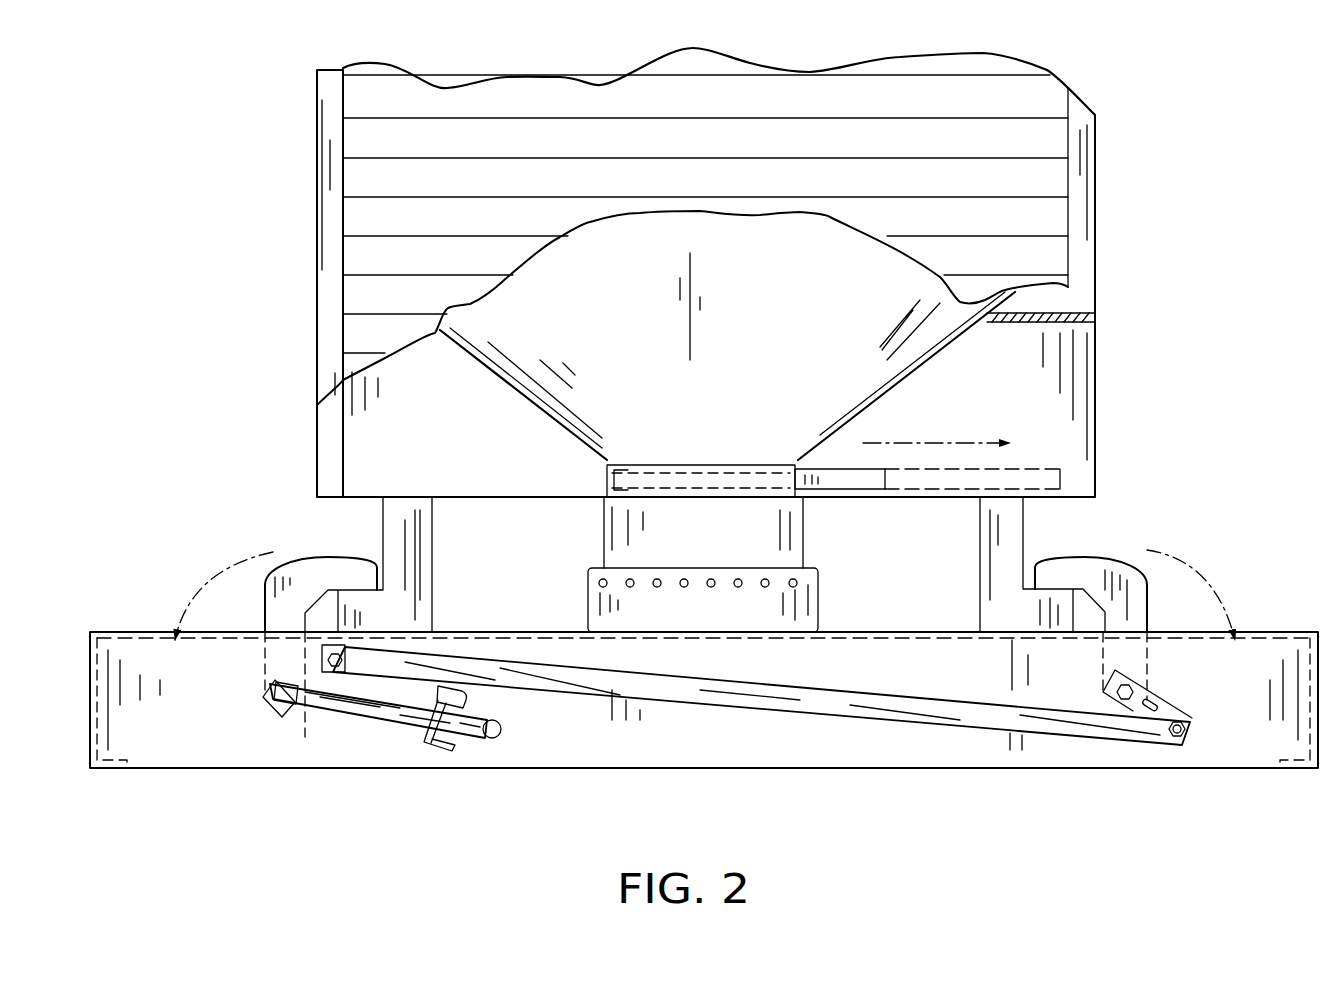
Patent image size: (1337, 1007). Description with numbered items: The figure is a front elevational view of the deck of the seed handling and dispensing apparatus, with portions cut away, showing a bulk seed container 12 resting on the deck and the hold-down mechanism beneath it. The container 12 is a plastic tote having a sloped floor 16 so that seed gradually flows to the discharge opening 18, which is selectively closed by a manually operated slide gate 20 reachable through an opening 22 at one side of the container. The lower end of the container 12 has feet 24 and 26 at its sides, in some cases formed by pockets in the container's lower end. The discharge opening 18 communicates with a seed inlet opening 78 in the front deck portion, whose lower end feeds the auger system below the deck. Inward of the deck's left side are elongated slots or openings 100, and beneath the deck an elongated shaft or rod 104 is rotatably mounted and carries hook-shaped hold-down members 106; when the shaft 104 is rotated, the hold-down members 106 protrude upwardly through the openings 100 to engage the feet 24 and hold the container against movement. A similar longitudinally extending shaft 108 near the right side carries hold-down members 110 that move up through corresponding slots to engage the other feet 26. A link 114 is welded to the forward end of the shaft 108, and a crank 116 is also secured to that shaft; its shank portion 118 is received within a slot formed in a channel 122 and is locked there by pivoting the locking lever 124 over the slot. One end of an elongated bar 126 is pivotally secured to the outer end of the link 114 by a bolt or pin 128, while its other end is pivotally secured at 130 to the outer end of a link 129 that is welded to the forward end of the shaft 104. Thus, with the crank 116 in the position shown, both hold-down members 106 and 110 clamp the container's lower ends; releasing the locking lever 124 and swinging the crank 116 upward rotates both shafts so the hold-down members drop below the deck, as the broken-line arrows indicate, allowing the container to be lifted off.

The bulk seed container 12 is at (1022, 221).
The sloped floor 16 is at (897, 388).
The discharge opening 18 is at (761, 462).
The slide gate 20 is at (864, 489).
The opening 22 is at (1053, 413).
The foot 24 is at (980, 596).
The foot 26 is at (432, 600).
The seed inlet opening 78 is at (604, 538).
The elongated slots or openings 100 is at (1180, 632).
The shaft or rod 104 is at (1157, 690).
The hold-down members 106 is at (1095, 548).
The shaft 108 is at (290, 700).
The hold-down members 110 is at (312, 556).
The link 114 is at (290, 665).
The crank 116 is at (485, 716).
The shank portion 118 is at (387, 712).
The channel 122 is at (419, 762).
The locking lever 124 is at (475, 685).
The elongated bar 126 is at (946, 703).
The bolt or pin 128 is at (337, 653).
The link 129 is at (1172, 712).
The pivot connection 130 is at (1180, 740).